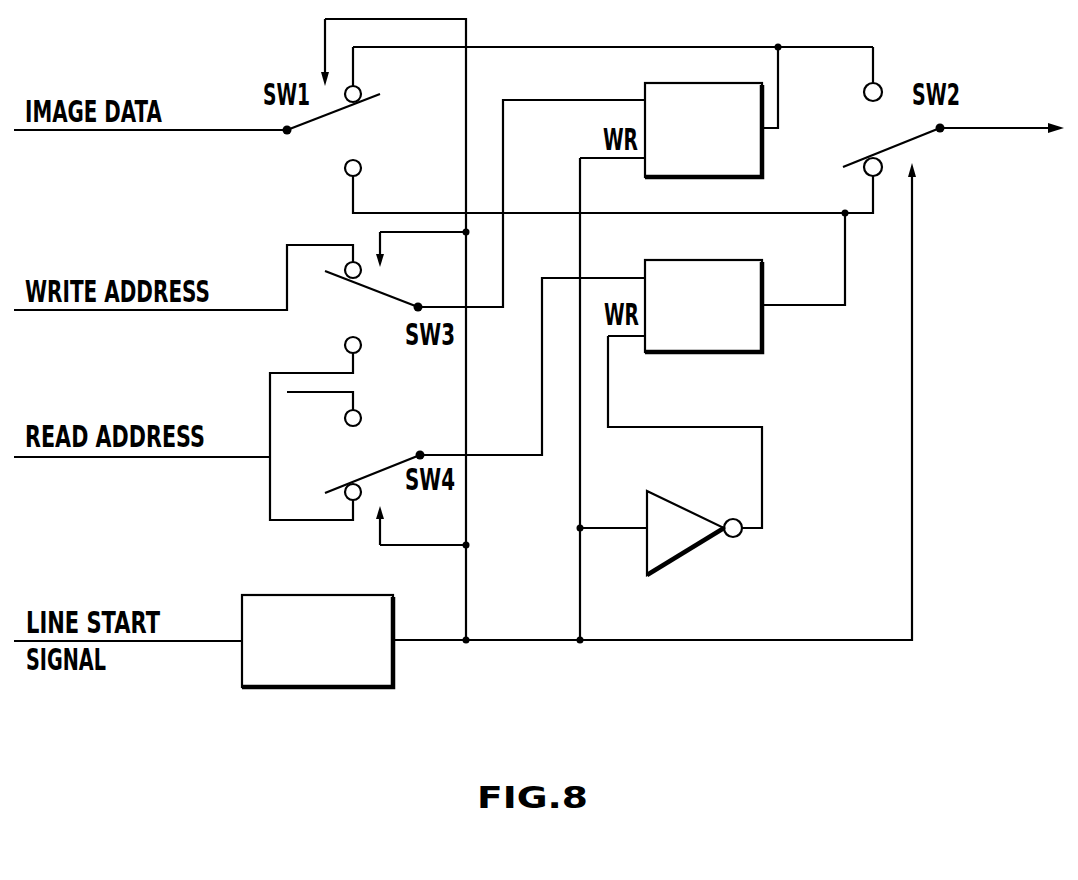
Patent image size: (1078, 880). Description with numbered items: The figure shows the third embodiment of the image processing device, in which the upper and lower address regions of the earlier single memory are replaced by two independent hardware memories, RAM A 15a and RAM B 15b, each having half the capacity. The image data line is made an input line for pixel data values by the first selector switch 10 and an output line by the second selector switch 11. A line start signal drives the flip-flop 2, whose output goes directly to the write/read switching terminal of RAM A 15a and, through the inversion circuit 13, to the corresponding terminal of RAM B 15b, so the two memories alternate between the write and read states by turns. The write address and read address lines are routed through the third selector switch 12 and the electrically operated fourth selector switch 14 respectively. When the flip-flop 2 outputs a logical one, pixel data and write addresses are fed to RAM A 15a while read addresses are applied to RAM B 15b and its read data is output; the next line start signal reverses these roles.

The flip-flop 2 is at (371, 688).
The first selector switch 10 is at (327, 127).
The second selector switch 11 is at (918, 160).
The third selector switch 12 is at (376, 300).
The inversion circuit 13 is at (698, 548).
The fourth selector switch 14 is at (363, 470).
The RAM A 15a is at (645, 92).
The RAM B 15b is at (762, 337).